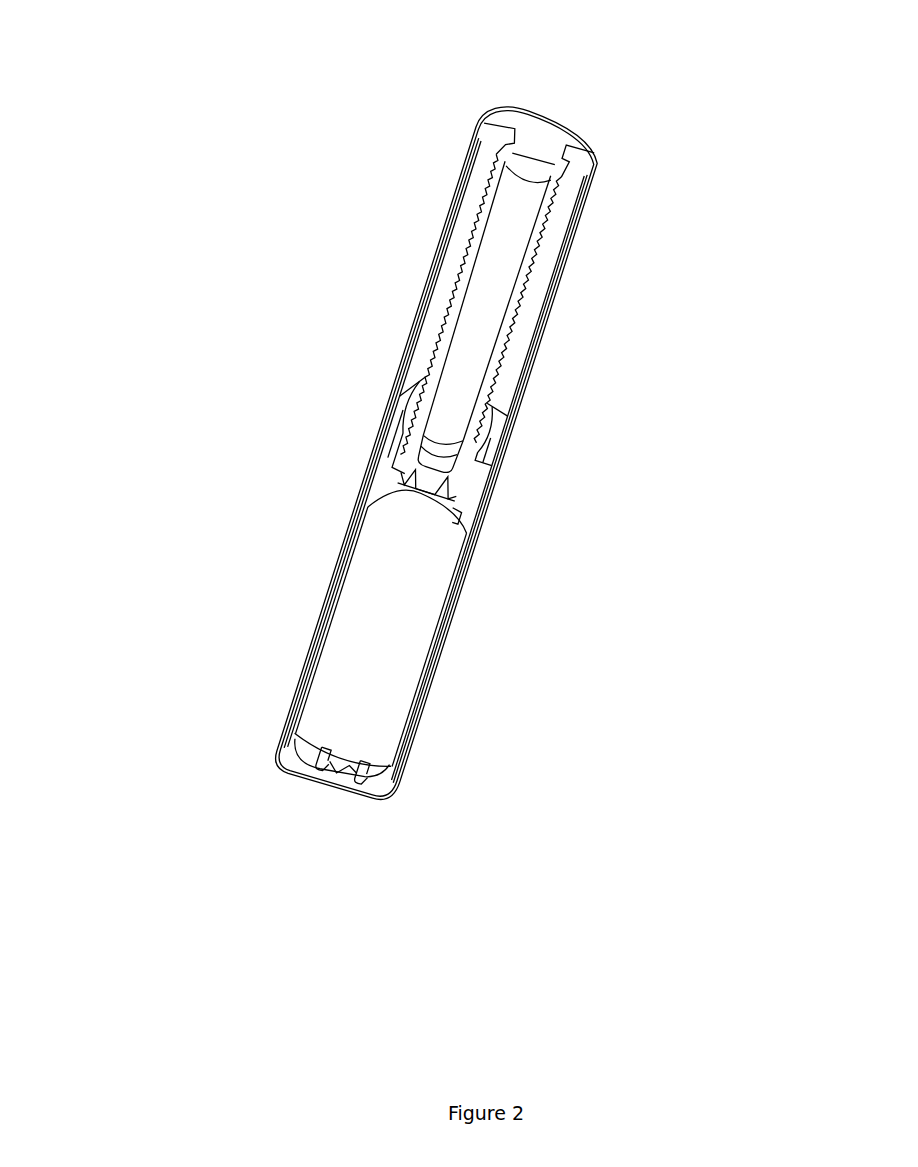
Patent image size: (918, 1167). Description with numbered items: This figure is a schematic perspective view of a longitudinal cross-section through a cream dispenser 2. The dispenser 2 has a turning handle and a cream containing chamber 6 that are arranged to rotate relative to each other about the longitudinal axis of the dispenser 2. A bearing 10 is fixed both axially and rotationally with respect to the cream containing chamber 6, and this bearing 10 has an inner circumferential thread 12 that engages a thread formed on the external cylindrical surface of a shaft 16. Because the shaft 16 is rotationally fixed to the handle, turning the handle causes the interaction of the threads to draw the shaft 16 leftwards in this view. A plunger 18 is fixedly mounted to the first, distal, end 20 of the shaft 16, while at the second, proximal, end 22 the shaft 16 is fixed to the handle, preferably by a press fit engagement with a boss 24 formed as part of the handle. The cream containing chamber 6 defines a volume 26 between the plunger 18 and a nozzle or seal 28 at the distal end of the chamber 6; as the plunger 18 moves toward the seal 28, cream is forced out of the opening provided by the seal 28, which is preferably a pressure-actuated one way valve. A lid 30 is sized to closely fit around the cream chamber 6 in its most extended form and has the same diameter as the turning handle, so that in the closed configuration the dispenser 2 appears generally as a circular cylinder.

The cream dispenser 2 is at (400, 215).
The cream containing chamber 6 is at (425, 690).
The bearing 10 is at (500, 413).
The inner circumferential thread 12 is at (420, 377).
The shaft 16 is at (553, 258).
The plunger 18 is at (458, 518).
The first, distal, end 20 is at (398, 457).
The second, proximal, end 22 is at (498, 146).
The boss 24 is at (537, 150).
The volume 26 is at (373, 637).
The nozzle or seal 28 is at (399, 786).
The lid 30 is at (313, 775).